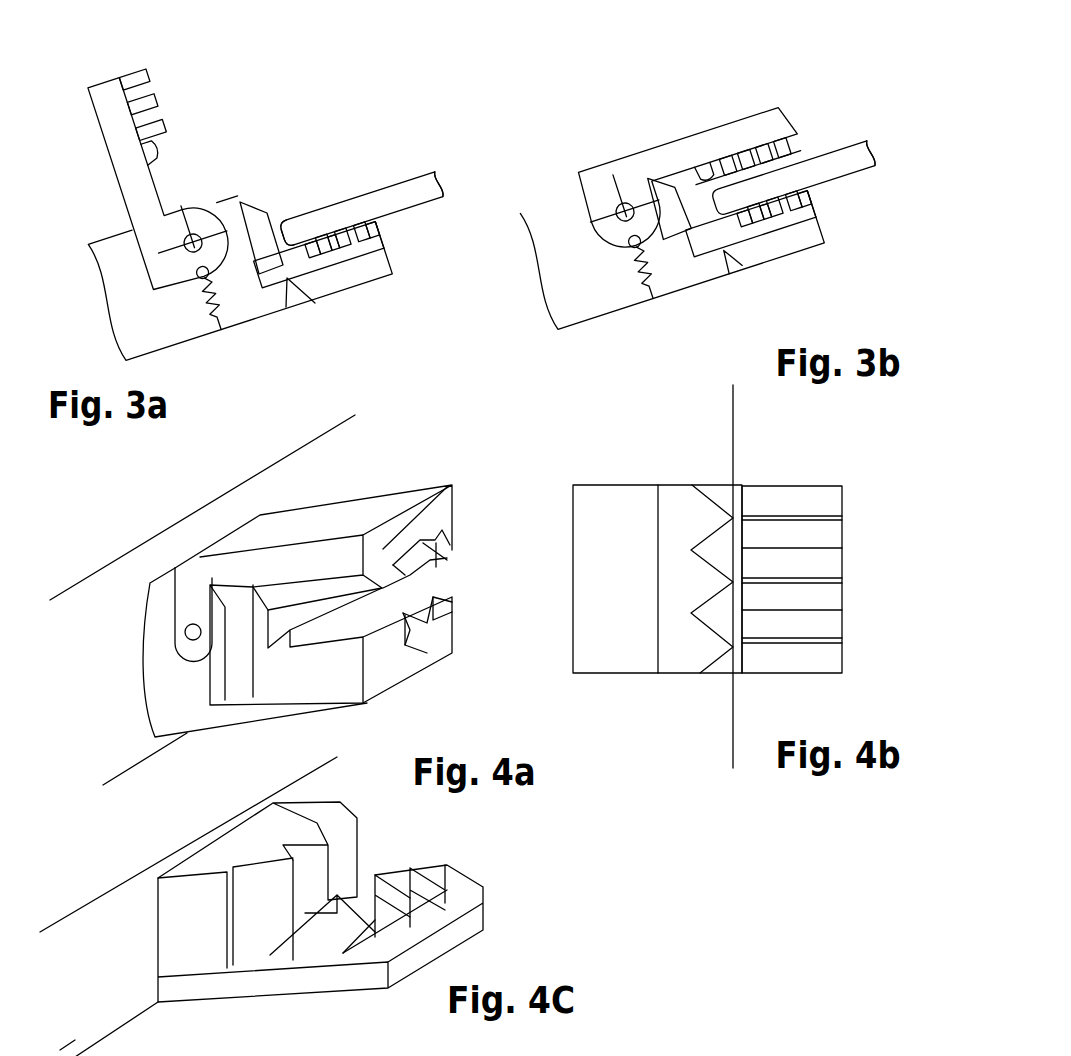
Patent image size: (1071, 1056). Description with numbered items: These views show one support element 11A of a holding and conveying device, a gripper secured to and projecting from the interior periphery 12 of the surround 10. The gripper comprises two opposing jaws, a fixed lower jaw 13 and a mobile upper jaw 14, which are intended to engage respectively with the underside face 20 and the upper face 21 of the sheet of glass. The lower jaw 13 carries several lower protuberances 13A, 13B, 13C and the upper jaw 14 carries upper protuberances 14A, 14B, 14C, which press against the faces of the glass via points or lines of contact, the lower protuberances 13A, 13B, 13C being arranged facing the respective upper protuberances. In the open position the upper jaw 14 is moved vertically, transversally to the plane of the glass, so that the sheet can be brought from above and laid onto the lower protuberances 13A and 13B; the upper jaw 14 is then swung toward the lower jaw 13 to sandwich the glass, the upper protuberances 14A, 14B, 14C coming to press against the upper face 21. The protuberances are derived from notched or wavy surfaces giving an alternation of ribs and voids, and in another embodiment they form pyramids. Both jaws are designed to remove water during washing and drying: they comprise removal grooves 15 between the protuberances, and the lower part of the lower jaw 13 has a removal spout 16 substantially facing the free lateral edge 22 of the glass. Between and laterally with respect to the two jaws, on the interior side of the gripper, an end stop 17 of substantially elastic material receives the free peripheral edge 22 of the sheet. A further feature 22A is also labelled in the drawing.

In FIG. 4A, the surround 10 is at (117, 603).
In FIG. 4B, the surround 10 is at (598, 510).
In FIG. 4C, the surround 10 is at (100, 930).
In FIG. 3A, the support element 11A is at (432, 304).
In FIG. 3B, the support element 11A is at (866, 274).
In FIG. 3A, the interior periphery 12 is at (150, 290).
In FIG. 3B, the interior periphery 12 is at (580, 264).
In FIG. 4A, the interior periphery 12 is at (110, 742).
In FIG. 4C, the interior periphery 12 is at (118, 1017).
In FIG. 3A, the lower jaw 13 is at (365, 253).
In FIG. 3B, the lower jaw 13 is at (795, 258).
In FIG. 4A, the lower jaw 13 is at (386, 678).
In FIG. 4B, the lower jaw 13 is at (774, 530).
In FIG. 4C, the lower jaw 13 is at (370, 936).
In FIG. 3A, the lower protuberance 13A is at (308, 247).
In FIG. 3B, the lower protuberance 13A is at (758, 243).
In FIG. 4A, the lower protuberance 13A is at (360, 690).
In FIG. 4B, the lower protuberance 13A is at (798, 640).
In FIG. 4C, the lower protuberance 13A is at (457, 872).
In FIG. 3A, the lower protuberance 13B is at (350, 268).
In FIG. 3B, the lower protuberance 13B is at (783, 255).
In FIG. 4A, the lower protuberance 13B is at (410, 660).
In FIG. 4B, the lower protuberance 13B is at (798, 580).
In FIG. 4C, the lower protuberance 13B is at (420, 870).
In FIG. 3A, the lower protuberance 13C is at (380, 224).
In FIG. 3B, the lower protuberance 13C is at (813, 187).
In FIG. 4A, the lower protuberance 13C is at (443, 617).
In FIG. 4B, the lower protuberance 13C is at (798, 518).
In FIG. 3A, the upper jaw 14 is at (139, 146).
In FIG. 3B, the upper jaw 14 is at (721, 160).
In FIG. 4A, the upper jaw 14 is at (364, 525).
In FIG. 3A, the upper protuberance 14A is at (148, 163).
In FIG. 3B, the upper protuberance 14A is at (723, 167).
In FIG. 4A, the upper protuberance 14A is at (315, 593).
In FIG. 3B, the upper protuberance 14B is at (762, 150).
In FIG. 4A, the upper protuberance 14B is at (433, 592).
In FIG. 3A, the upper protuberance 14C is at (128, 75).
In FIG. 3B, the upper protuberance 14C is at (807, 153).
In FIG. 4A, the upper protuberance 14C is at (447, 558).
In FIG. 3A, the removal grooves 15 is at (150, 80).
In FIG. 3B, the removal grooves 15 is at (745, 148).
In FIG. 4A, the removal grooves 15 is at (400, 558).
In FIG. 4B, the removal grooves 15 is at (842, 548).
In FIG. 4C, the removal grooves 15 is at (350, 937).
In FIG. 3A, the removal spout 16 is at (298, 297).
In FIG. 3B, the removal spout 16 is at (732, 253).
In FIG. 3A, the end stop 17 is at (255, 240).
In FIG. 3B, the end stop 17 is at (653, 178).
In FIG. 4A, the end stop 17 is at (223, 685).
In FIG. 4B, the end stop 17 is at (677, 508).
In FIG. 4C, the end stop 17 is at (348, 860).
In FIG. 3A, the underside face 20 is at (410, 200).
In FIG. 3B, the underside face 20 is at (840, 167).
In FIG. 3A, the upper face 21 is at (388, 182).
In FIG. 3B, the upper face 21 is at (820, 157).
In FIG. 4C, the upper face 21 is at (89, 1048).
In FIG. 4B, the free lateral edge 22 is at (733, 445).
In FIG. 3A, the abutment 22A is at (282, 240).
In FIG. 3B, the abutment 22A is at (682, 173).